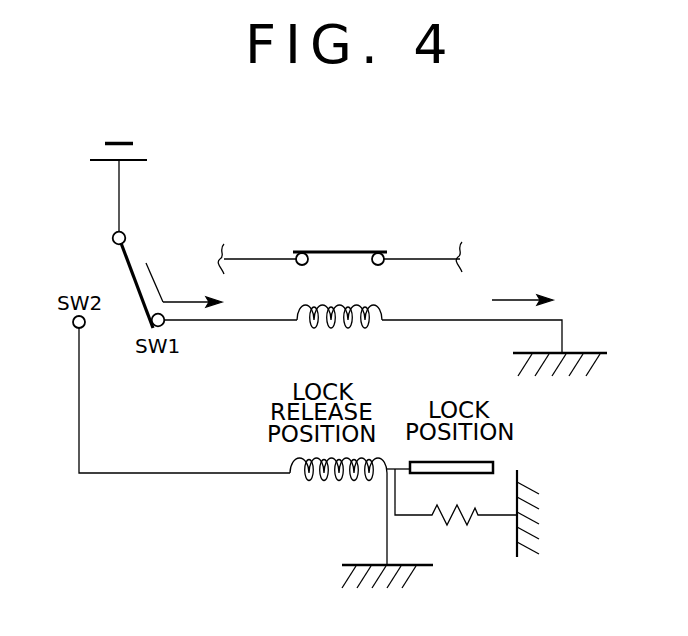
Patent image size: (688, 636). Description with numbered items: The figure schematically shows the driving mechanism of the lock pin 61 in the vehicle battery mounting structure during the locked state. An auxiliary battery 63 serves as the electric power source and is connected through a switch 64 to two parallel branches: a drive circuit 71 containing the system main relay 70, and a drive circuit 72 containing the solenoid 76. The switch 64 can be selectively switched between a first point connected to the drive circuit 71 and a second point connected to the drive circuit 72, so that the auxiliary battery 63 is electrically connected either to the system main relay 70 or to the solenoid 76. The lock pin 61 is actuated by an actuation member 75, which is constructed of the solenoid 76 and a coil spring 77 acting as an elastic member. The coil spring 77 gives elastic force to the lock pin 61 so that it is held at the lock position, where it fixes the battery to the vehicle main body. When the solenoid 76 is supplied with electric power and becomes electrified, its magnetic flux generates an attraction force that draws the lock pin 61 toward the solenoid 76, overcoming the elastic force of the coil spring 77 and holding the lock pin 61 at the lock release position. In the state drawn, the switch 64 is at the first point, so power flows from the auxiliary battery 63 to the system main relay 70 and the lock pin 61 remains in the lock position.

The lock pin 61 is at (494, 468).
The auxiliary battery 63 is at (104, 166).
The switch 64 is at (126, 255).
The system main relay 70 is at (337, 251).
The drive circuit 71 is at (421, 318).
The drive circuit 72 is at (158, 475).
The actuation member 75 is at (371, 523).
The solenoid 76 is at (339, 479).
The coil spring 77 is at (442, 518).